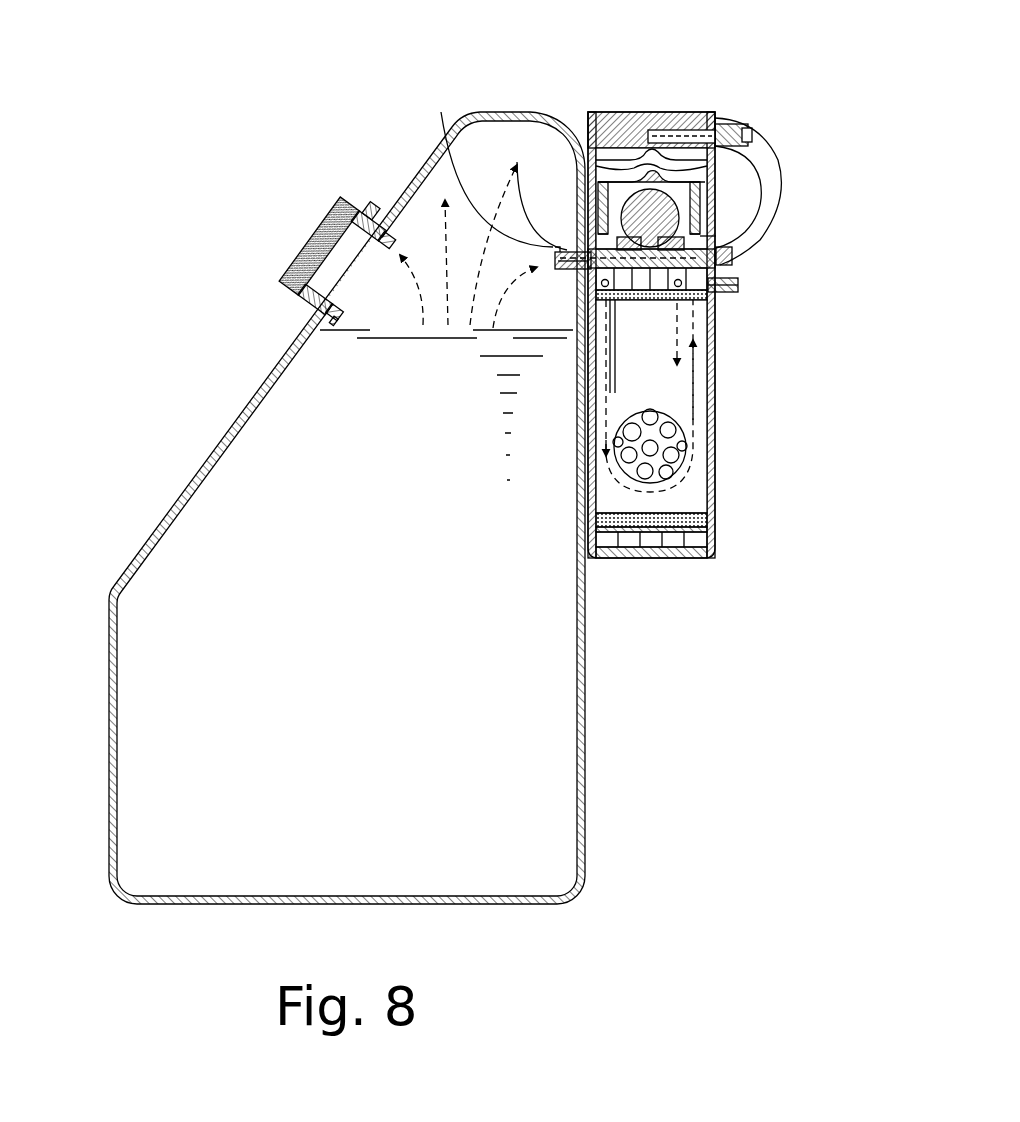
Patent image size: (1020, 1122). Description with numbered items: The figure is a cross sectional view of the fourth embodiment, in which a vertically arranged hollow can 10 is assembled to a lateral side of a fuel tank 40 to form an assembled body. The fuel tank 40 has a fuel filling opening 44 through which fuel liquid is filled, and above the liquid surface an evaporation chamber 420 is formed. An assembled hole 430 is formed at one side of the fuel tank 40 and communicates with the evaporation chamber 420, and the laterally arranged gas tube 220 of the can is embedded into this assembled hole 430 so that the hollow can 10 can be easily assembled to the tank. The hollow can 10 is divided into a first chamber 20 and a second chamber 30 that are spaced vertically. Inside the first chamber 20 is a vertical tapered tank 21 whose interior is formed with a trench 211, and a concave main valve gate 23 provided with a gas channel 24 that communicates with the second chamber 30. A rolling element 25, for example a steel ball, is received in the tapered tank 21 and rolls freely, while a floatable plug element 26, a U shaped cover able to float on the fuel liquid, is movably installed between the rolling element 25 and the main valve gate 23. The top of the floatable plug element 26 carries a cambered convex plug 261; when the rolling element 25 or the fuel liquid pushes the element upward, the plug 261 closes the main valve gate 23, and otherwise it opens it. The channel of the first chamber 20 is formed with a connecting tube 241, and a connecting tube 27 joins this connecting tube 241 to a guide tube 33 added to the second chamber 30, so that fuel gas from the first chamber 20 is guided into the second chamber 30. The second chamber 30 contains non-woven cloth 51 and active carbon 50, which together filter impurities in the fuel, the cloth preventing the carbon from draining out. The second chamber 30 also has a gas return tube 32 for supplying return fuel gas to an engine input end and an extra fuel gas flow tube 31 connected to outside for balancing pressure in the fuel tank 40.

The vertical hollow can 10 is at (716, 548).
The first chamber 20 is at (712, 122).
The tapered tank 21 is at (718, 293).
The trench 211 is at (742, 237).
The gas tube 220 is at (483, 162).
The main valve gate 23 is at (640, 158).
The gas channel 24 is at (676, 130).
The connecting tube 241 is at (765, 125).
The rolling element 25 is at (682, 203).
The floatable plug element 26 is at (758, 150).
The cambered convex plug 261 is at (634, 165).
The connecting tube 27 is at (778, 182).
The second chamber 30 is at (700, 476).
The fuel gas flow tube 31 is at (517, 162).
The gas return tube 32 is at (740, 285).
The guide tube 33 is at (737, 254).
The fuel tank 40 is at (145, 542).
The evaporation chamber 420 is at (430, 227).
The assembled hole 430 is at (568, 249).
The fuel filling opening 44 is at (340, 250).
The active carbon 50 is at (680, 442).
The non-woven cloth 51 is at (700, 512).